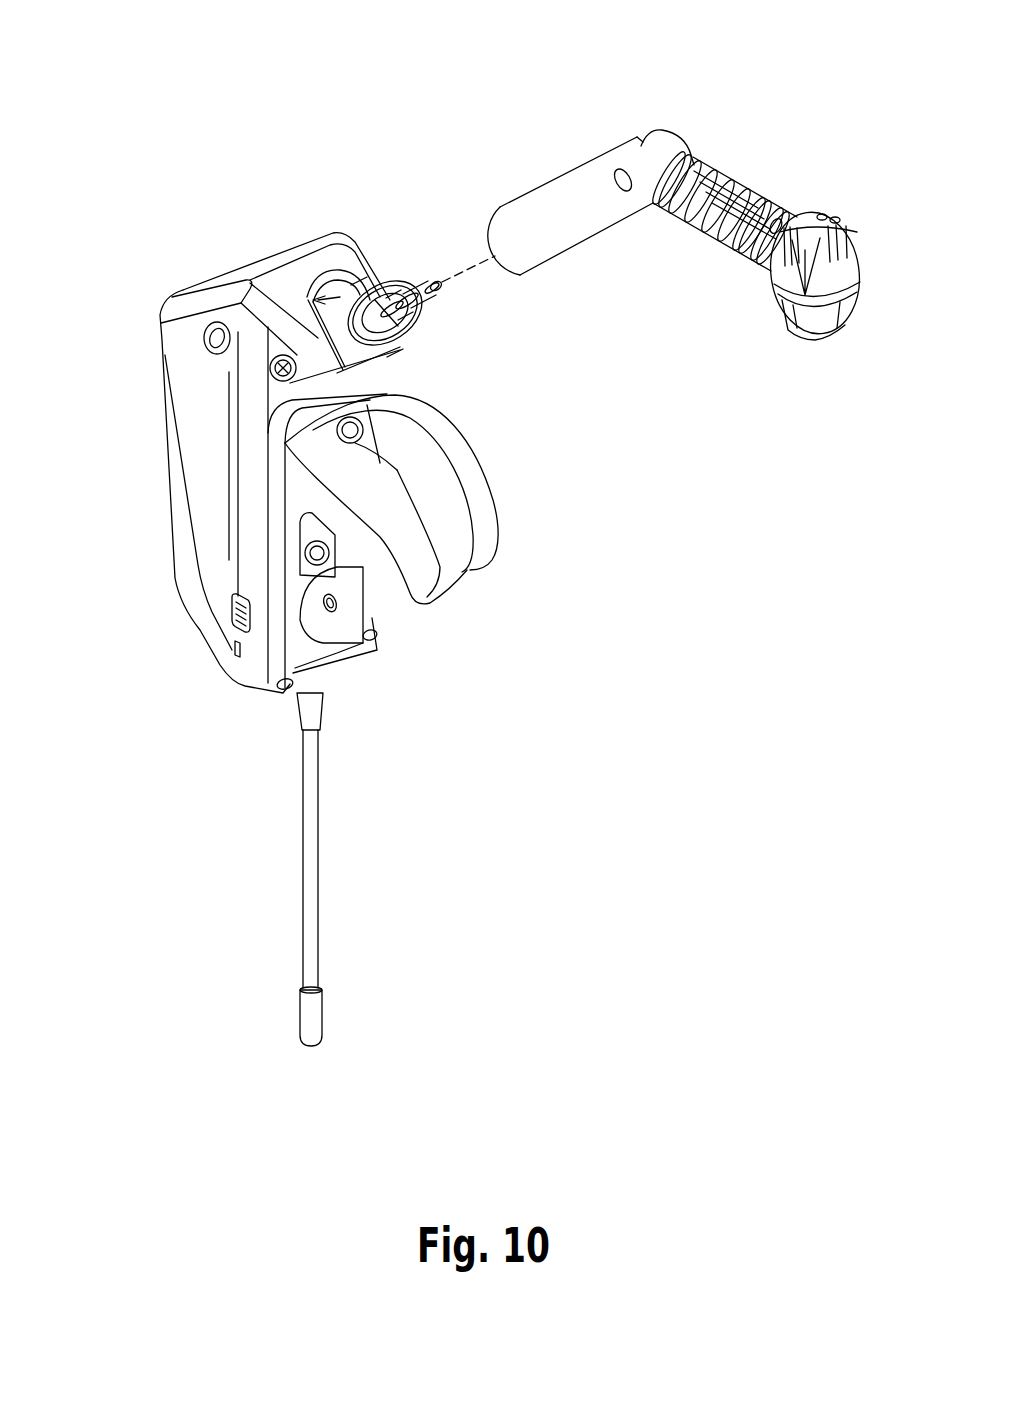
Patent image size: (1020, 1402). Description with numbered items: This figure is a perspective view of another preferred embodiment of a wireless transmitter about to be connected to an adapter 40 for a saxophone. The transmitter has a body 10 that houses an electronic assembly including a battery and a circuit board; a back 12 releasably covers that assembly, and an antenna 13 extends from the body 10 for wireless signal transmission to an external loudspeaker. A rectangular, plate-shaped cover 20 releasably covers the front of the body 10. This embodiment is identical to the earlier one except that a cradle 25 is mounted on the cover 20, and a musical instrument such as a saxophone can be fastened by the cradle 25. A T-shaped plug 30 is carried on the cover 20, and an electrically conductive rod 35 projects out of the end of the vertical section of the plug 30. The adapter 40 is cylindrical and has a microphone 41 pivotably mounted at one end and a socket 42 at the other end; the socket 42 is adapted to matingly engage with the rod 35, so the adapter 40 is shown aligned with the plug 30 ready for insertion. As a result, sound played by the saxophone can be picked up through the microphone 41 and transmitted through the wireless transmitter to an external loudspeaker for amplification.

The body 10 is at (193, 388).
The back 12 is at (183, 575).
The antenna 13 is at (310, 837).
The cover 20 is at (335, 643).
The cradle 25 is at (418, 488).
The plug 30 is at (342, 302).
The electrically conductive rod 35 is at (437, 300).
The adapter 40 is at (649, 112).
The microphone 41 is at (825, 328).
The socket 42 is at (508, 227).